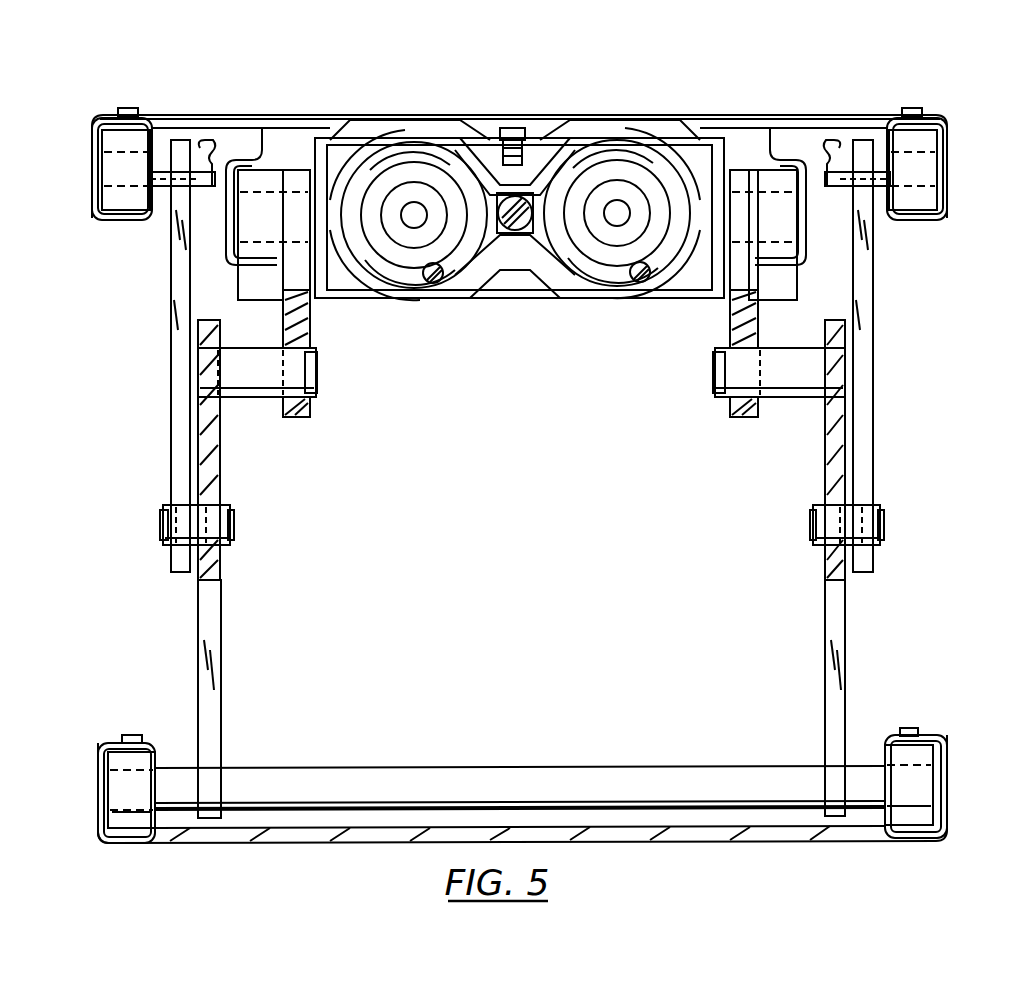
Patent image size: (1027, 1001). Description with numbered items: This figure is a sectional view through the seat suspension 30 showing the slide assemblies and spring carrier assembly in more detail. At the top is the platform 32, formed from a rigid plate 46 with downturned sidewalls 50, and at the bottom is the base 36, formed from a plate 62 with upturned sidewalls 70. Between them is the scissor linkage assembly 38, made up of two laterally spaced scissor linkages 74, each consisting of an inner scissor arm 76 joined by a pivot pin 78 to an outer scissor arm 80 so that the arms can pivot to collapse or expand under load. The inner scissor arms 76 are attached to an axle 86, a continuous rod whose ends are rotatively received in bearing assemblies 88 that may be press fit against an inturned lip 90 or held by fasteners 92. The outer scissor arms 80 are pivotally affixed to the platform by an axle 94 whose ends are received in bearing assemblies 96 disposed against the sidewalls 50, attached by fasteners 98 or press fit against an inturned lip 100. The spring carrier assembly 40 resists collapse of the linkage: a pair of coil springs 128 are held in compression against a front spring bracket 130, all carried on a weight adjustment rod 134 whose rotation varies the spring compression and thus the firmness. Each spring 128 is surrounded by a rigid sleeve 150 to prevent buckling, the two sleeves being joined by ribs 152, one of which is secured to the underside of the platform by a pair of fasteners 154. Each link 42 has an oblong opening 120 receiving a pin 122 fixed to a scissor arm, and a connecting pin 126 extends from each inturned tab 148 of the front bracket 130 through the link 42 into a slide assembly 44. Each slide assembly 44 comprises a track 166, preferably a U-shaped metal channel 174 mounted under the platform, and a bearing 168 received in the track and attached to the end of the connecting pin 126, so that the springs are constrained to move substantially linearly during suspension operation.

The seat suspension 30 is at (120, 605).
The platform 32 is at (850, 108).
The base 36 is at (762, 842).
The scissor linkage assembly 38 is at (914, 490).
The spring carrier assembly 40 is at (550, 342).
The link 42 is at (310, 316).
The slide assembly 44 is at (272, 272).
The plate 46 is at (300, 120).
The sidewall 50 is at (92, 150).
The plate 62 is at (308, 830).
The sidewall 70 is at (97, 772).
The scissor linkage 74 is at (190, 628).
The inner scissor arm 76 is at (215, 716).
The pivot pin 78 is at (232, 530).
The outer scissor arm 80 is at (171, 462).
The axle 86 is at (522, 768).
The bearing assembly 88 is at (112, 812).
The inturned lip 90 is at (152, 743).
The fastener 92 is at (128, 735).
The axle 94 is at (180, 140).
The bearing assembly 96 is at (110, 200).
The fastener 98 is at (126, 108).
The inturned lip 100 is at (132, 220).
The oblong opening 120 is at (300, 333).
The pin 122 is at (318, 372).
The connecting pin 126 is at (258, 128).
The spring 128 is at (428, 283).
The front spring bracket 130 is at (660, 140).
The weight adjustment rod 134 is at (518, 236).
The inturned tab 148 is at (330, 140).
The sleeve 150 is at (388, 140).
The rib 152 is at (525, 150).
The fastener 154 is at (510, 128).
The track 166 is at (236, 160).
The bearing 168 is at (262, 258).
The U-shaped metal channel 174 is at (230, 258).